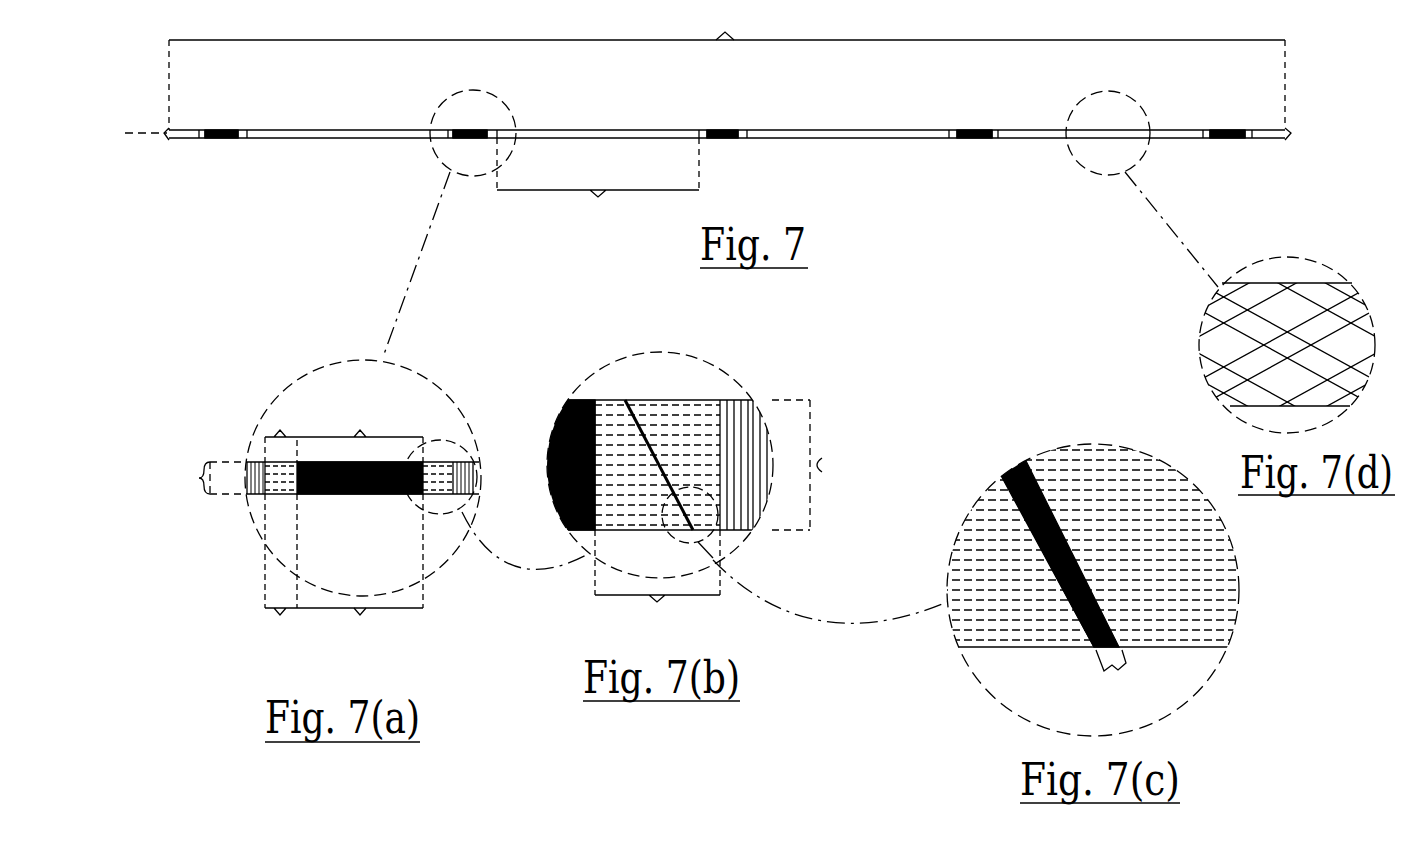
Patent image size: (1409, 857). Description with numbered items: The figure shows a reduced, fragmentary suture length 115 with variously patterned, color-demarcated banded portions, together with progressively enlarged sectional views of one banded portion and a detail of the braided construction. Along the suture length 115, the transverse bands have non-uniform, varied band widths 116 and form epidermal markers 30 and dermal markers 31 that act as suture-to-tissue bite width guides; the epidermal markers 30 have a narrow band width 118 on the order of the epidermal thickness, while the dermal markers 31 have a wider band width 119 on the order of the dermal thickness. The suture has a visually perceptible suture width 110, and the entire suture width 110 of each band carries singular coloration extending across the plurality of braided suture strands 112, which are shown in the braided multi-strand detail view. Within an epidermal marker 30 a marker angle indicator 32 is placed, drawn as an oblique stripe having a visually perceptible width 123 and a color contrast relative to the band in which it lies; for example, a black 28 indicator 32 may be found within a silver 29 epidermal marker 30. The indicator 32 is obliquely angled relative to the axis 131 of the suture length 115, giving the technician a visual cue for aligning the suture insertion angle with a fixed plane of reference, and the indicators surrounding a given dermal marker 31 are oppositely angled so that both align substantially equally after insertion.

In FIG. 7, the black 28 is at (466, 130).
In FIG. 7B, the black 28 is at (555, 422).
In FIG. 7C, the black 28 is at (1012, 468).
In FIG. 7, the gray or silver 29 is at (237, 140).
In FIG. 7B, the gray or silver 29 is at (683, 408).
In FIG. 7C, the gray or silver 29 is at (1060, 462).
In FIG. 7, the epidermal marker 30 is at (247, 128).
In FIG. 7B, the epidermal marker 30 is at (706, 408).
In FIG. 7C, the epidermal marker 30 is at (1190, 636).
In FIG. 7, the dermal marker 31 is at (222, 140).
In FIG. 7B, the marker angle indicator 32 is at (640, 404).
In FIG. 7C, the marker angle indicator 32 is at (1008, 517).
In FIG. 7A, the suture width 110 is at (199, 478).
In FIG. 7B, the suture width 110 is at (822, 465).
In FIG. 7D, the braided suture strands 112 is at (1327, 285).
In FIG. 7, the suture length 115 is at (727, 65).
In FIG. 7, the varied band widths 116 is at (598, 186).
In FIG. 7A, the varied band widths 116 is at (343, 431).
In FIG. 7A, the epidermal marker band width 118 is at (337, 573).
In FIG. 7B, the epidermal marker band width 118 is at (657, 584).
In FIG. 7A, the dermal marker band width 119 is at (360, 557).
In FIG. 7C, the indicator width 123 is at (1125, 678).
In FIG. 7, the axis of the suture length 131 is at (165, 131).